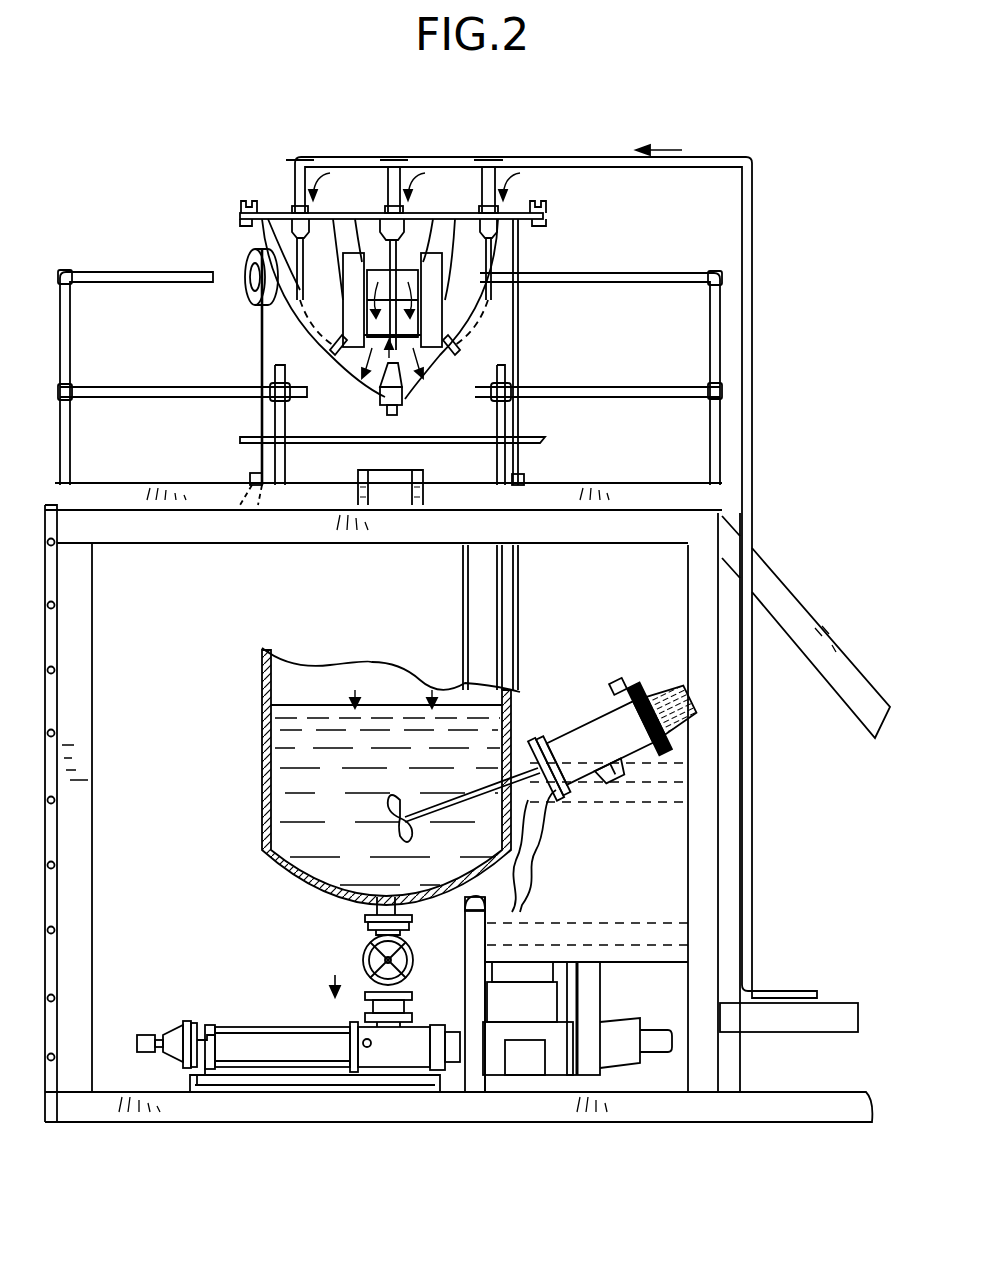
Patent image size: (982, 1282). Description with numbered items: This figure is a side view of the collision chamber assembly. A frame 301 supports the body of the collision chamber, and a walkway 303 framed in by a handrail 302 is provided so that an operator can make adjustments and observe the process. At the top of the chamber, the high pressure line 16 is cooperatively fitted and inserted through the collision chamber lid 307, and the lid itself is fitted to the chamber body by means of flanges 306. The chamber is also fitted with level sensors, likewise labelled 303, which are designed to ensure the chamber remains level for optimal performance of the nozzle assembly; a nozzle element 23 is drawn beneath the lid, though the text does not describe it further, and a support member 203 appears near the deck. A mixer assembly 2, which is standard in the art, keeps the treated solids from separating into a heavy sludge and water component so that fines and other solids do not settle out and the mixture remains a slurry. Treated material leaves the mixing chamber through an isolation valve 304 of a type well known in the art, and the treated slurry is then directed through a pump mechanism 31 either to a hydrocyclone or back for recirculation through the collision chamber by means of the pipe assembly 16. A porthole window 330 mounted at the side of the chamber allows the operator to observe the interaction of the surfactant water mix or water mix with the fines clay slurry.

The mixer assembly 2 is at (602, 732).
The high pressure line 16 is at (343, 156).
The nozzle 23 is at (385, 413).
The pump mechanism 31 is at (287, 1040).
The support block 203 is at (523, 480).
The frame 301 is at (703, 523).
The handrail 302 is at (723, 330).
The walkway 303 is at (253, 480).
The isolation valve 304 is at (362, 958).
The flanges 306 is at (545, 205).
The collision chamber lid 307 is at (517, 213).
The porthole window 330 is at (247, 267).